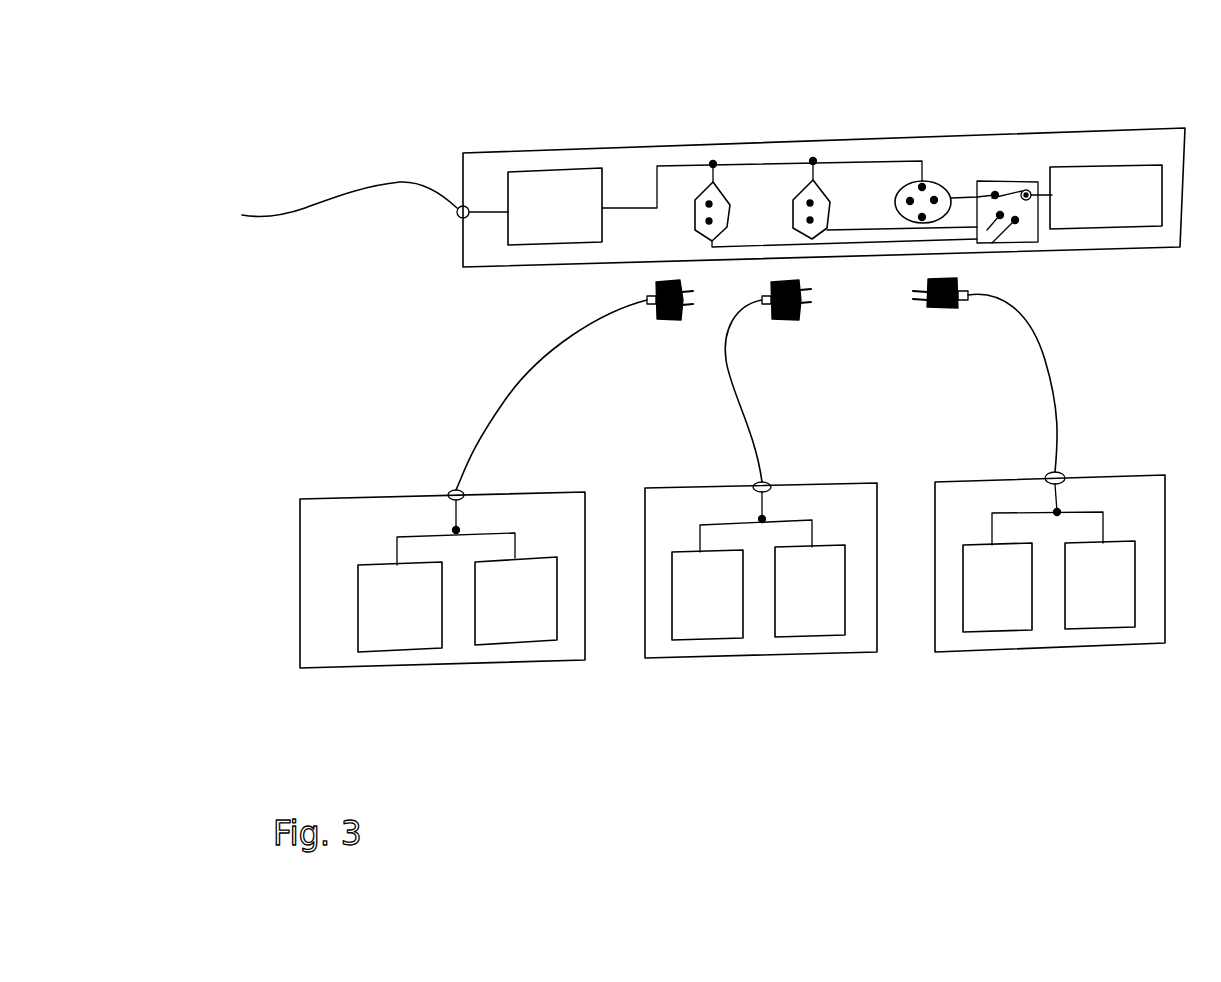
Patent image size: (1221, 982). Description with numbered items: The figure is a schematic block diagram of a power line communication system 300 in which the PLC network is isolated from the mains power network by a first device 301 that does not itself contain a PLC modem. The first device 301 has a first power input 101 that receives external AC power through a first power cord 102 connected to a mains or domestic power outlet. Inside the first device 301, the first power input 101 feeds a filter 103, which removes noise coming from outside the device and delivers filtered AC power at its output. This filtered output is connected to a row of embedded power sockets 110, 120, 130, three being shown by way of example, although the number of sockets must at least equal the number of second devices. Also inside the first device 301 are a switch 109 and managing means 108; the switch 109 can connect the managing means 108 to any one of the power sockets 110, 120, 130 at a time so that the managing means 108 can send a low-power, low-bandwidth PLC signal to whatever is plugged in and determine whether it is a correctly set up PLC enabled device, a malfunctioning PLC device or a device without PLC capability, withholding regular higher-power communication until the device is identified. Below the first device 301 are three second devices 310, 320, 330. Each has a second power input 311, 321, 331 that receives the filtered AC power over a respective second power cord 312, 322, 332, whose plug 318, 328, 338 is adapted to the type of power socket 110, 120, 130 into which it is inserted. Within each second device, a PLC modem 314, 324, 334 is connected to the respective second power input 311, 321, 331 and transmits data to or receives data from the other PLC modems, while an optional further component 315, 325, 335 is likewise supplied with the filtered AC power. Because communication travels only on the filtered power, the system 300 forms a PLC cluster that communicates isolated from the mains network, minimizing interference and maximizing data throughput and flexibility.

The power line communication system 300 is at (705, 383).
The first device 301 is at (737, 146).
The first power cord 102 is at (303, 202).
The first power input 101 is at (458, 218).
The filter 103 is at (548, 170).
The power socket 110 is at (703, 192).
The power socket 120 is at (822, 188).
The power socket 130 is at (935, 185).
The switch 109 is at (1023, 243).
The managing means 108 is at (1100, 167).
The plug 318 is at (675, 320).
The plug 328 is at (793, 320).
The plug 338 is at (928, 308).
The second power cord 312 is at (503, 402).
The second power cord 322 is at (762, 400).
The second power cord 332 is at (1052, 360).
The second power input 311 is at (450, 490).
The second power input 321 is at (755, 483).
The second power input 331 is at (1063, 473).
The second device 310 is at (404, 584).
The second device 320 is at (761, 581).
The second device 330 is at (1059, 577).
The PLC modem 314 is at (357, 610).
The further component 315 is at (530, 643).
The PLC modem 324 is at (698, 638).
The further component 325 is at (833, 637).
The PLC modem 334 is at (988, 630).
The further component 335 is at (1120, 627).